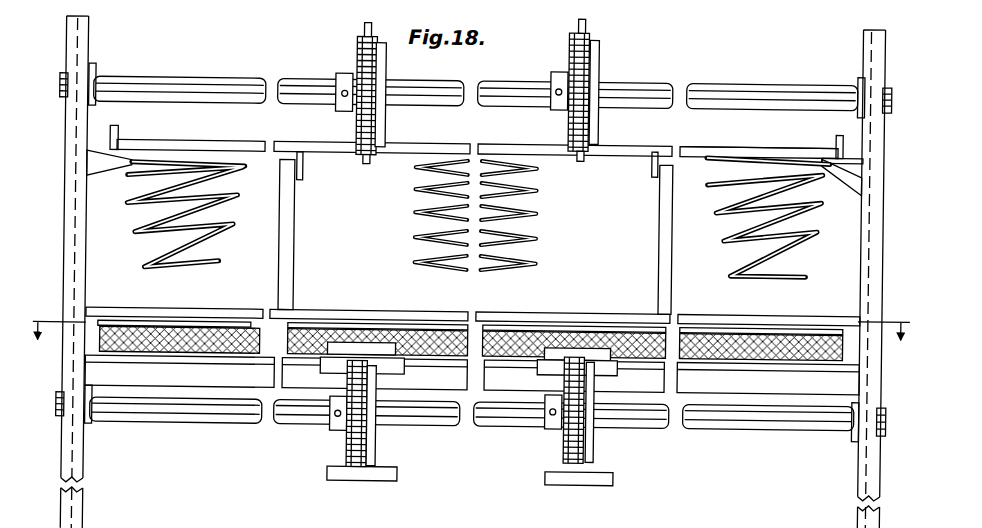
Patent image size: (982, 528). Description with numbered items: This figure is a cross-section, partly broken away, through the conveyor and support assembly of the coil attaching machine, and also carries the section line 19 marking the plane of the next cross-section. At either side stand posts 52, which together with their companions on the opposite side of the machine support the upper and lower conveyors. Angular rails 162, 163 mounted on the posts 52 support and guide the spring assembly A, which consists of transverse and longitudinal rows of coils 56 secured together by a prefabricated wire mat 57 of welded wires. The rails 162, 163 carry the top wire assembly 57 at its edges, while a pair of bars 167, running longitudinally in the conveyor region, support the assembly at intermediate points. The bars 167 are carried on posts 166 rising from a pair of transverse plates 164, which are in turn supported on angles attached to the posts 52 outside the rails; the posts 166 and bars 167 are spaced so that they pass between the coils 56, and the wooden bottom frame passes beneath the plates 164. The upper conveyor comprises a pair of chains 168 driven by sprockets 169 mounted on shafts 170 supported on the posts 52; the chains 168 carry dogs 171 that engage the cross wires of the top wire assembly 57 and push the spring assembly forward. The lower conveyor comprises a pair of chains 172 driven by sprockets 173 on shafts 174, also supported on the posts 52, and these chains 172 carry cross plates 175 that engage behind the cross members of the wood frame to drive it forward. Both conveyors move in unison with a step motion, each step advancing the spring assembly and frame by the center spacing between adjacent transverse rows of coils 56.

The posts 52 is at (66, 213).
The coils 56 is at (222, 218).
The prefabricated wire mat 57 is at (735, 139).
The rail 162 is at (117, 127).
The rail 163 is at (836, 126).
The transverse plates 164 is at (577, 314).
The posts 166 is at (292, 240).
The bars 167 is at (303, 170).
The chains 168 is at (384, 43).
The sprockets 169 is at (360, 52).
The shafts 170 is at (197, 83).
The dogs 171 is at (361, 21).
The chains 172 is at (380, 452).
The sprockets 173 is at (352, 432).
The shafts 174 is at (239, 411).
The cross plates 175 is at (359, 337).
The spring assembly A is at (396, 138).
The section line 19— 19 is at (468, 353).